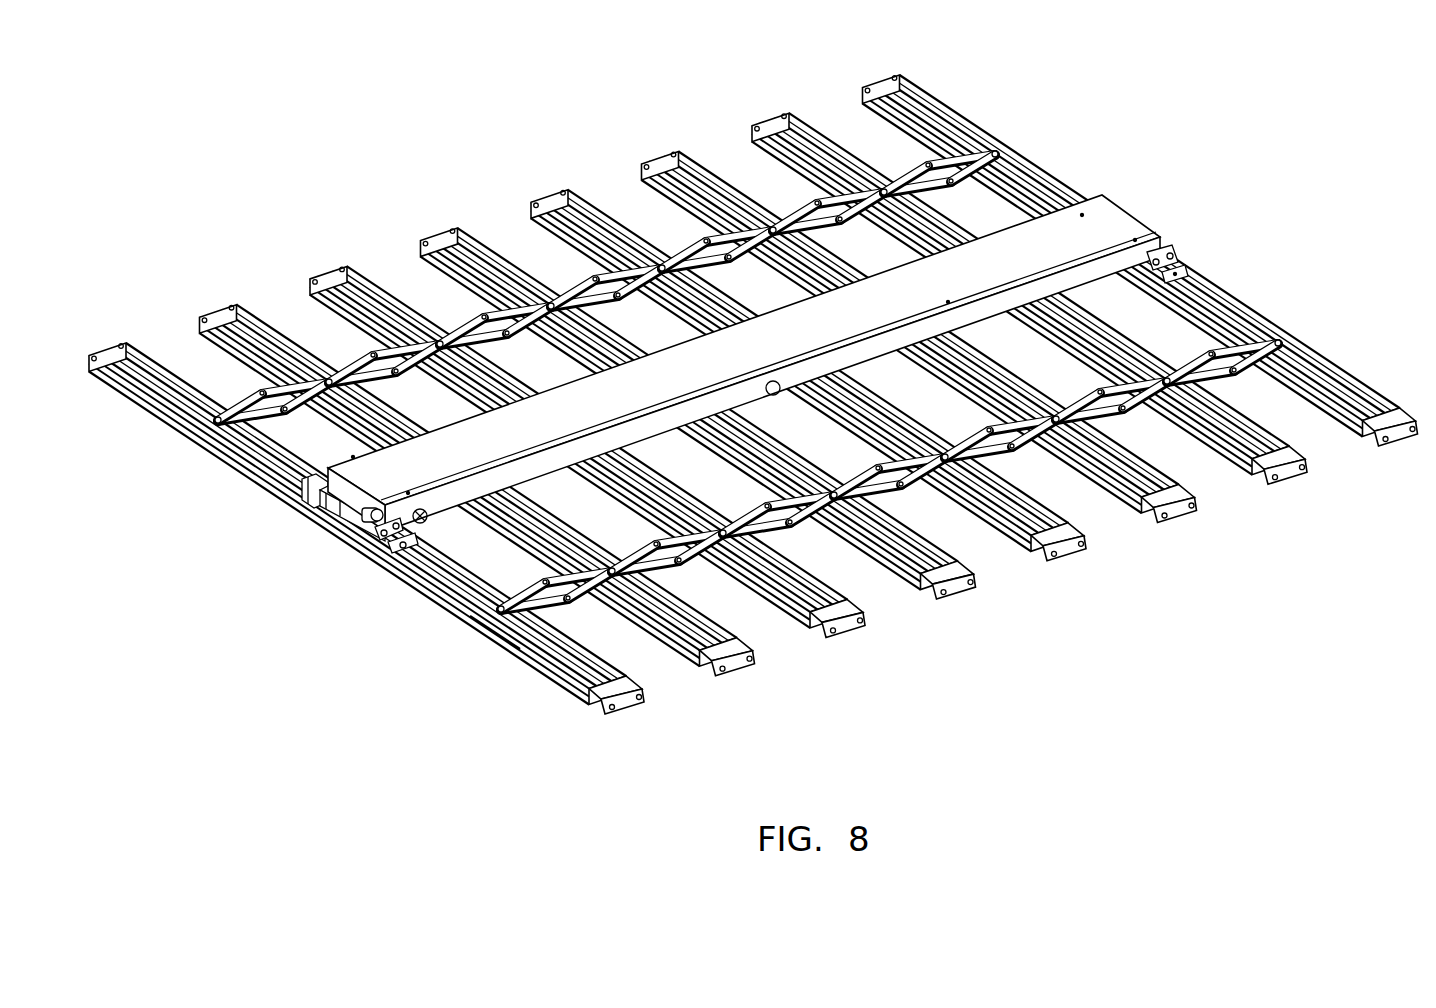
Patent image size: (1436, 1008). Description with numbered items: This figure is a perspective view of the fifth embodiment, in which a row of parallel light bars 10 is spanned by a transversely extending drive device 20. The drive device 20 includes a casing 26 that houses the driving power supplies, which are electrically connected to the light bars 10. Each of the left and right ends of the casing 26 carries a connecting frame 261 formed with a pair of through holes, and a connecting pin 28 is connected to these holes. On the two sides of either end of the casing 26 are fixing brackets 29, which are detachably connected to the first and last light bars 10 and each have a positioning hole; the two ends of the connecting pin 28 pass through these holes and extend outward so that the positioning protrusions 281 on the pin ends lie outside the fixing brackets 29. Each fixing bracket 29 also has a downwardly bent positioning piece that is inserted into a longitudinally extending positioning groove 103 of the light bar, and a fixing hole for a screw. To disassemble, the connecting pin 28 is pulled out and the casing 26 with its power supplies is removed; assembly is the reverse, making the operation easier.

The light bar 10 is at (1212, 297).
The positioning groove 103 is at (477, 618).
The drive device 20 is at (1112, 224).
The casing 26 is at (273, 479).
The fixing bracket 29 is at (293, 499).
The connecting frame 261 is at (322, 522).
The connecting pin 28 is at (383, 538).
The positioning protrusion 281 is at (372, 545).